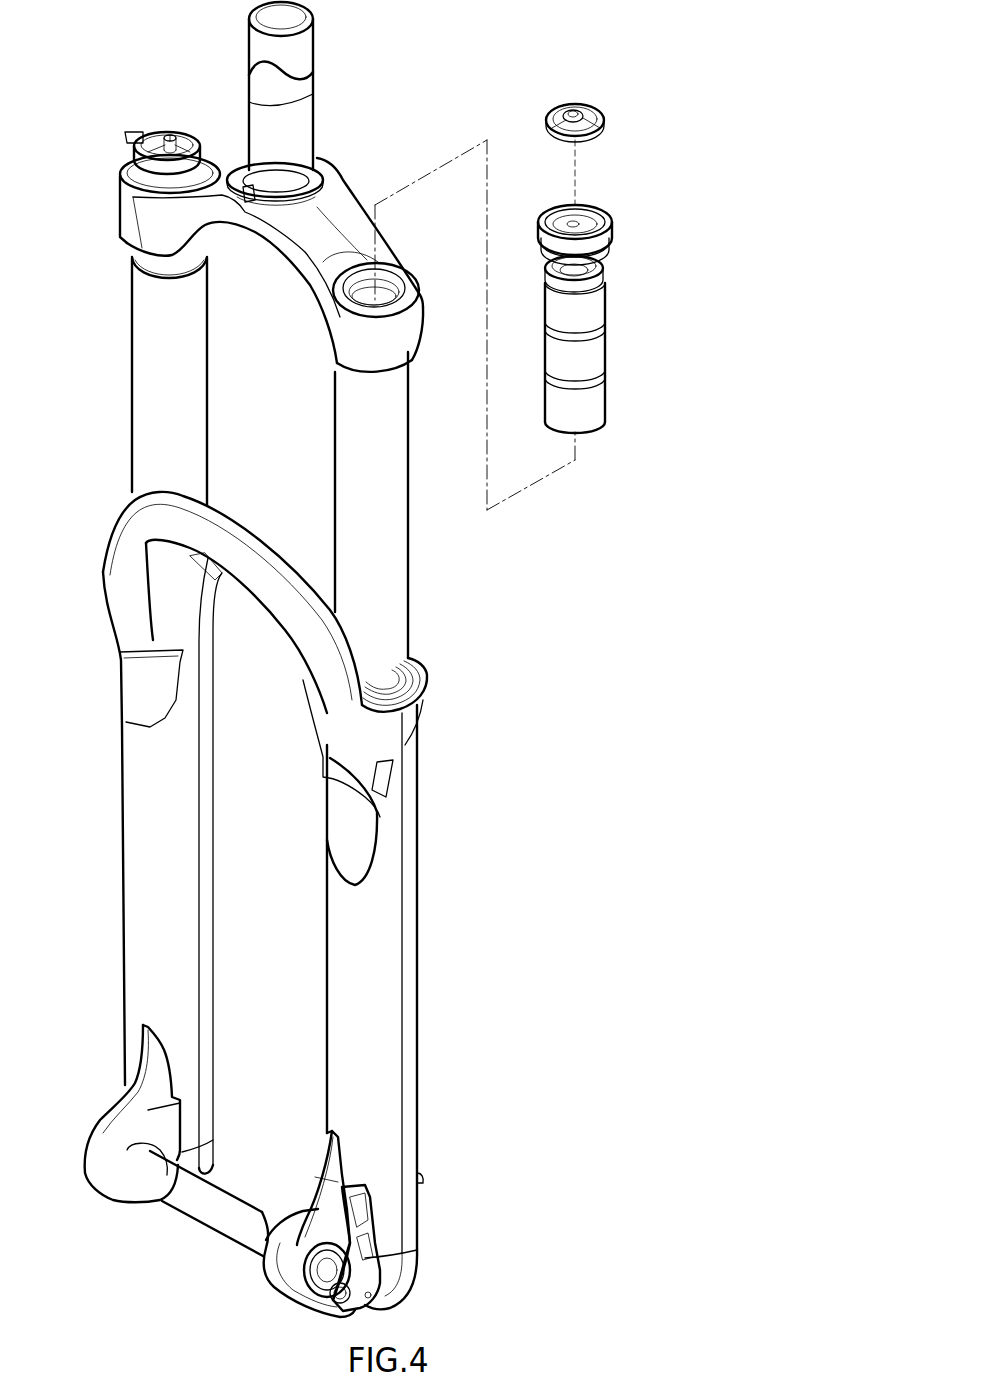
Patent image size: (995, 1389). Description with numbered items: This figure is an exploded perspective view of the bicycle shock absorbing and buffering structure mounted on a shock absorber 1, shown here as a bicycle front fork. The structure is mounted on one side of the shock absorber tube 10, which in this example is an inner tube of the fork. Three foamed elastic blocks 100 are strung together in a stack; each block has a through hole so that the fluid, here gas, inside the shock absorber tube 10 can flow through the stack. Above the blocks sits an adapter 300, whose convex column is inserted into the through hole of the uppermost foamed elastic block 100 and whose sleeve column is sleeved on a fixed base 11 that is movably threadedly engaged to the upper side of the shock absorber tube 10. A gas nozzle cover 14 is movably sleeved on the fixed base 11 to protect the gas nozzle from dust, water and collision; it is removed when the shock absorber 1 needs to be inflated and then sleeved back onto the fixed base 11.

The shock absorber 1 is at (332, 659).
The shock absorber tube 10 is at (397, 585).
The fixed base 11 is at (620, 214).
The gas nozzle cover 14 is at (606, 101).
The foamed elastic block 100 is at (598, 351).
The adapter 300 is at (621, 268).